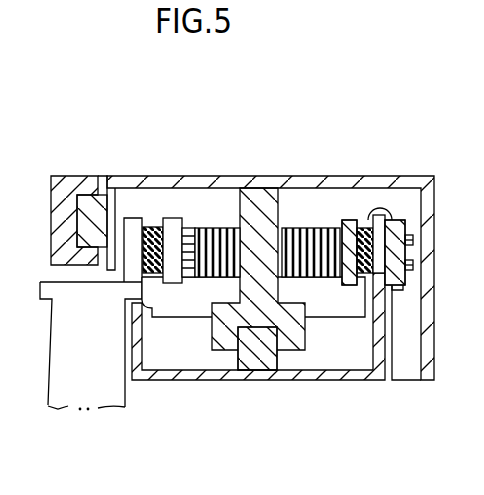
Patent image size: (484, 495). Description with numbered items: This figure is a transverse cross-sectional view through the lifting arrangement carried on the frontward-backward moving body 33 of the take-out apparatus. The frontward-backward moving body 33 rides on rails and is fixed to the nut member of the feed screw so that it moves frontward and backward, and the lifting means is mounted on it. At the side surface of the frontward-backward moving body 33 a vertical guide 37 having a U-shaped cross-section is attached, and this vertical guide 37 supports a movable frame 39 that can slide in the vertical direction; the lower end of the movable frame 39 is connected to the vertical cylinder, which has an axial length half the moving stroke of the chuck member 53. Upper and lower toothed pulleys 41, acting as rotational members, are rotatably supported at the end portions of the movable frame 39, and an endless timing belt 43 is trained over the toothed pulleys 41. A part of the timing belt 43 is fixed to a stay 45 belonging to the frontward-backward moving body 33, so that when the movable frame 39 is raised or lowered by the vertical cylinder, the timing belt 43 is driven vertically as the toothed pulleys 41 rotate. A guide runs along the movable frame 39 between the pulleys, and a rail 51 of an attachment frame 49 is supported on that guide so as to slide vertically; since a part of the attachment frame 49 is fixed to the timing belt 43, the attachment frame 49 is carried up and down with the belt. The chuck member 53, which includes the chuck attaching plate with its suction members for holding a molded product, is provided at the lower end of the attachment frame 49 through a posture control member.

The frontward-backward moving body 33 is at (66, 393).
The vertical guide 37 is at (78, 190).
The movable frame 39 is at (419, 177).
The toothed pulleys 41 is at (317, 230).
The timing belt 43 is at (155, 223).
The stay 45 is at (131, 230).
The attachment frame 49 is at (258, 218).
The rail 51 is at (321, 378).
The chuck member 53 is at (243, 357).